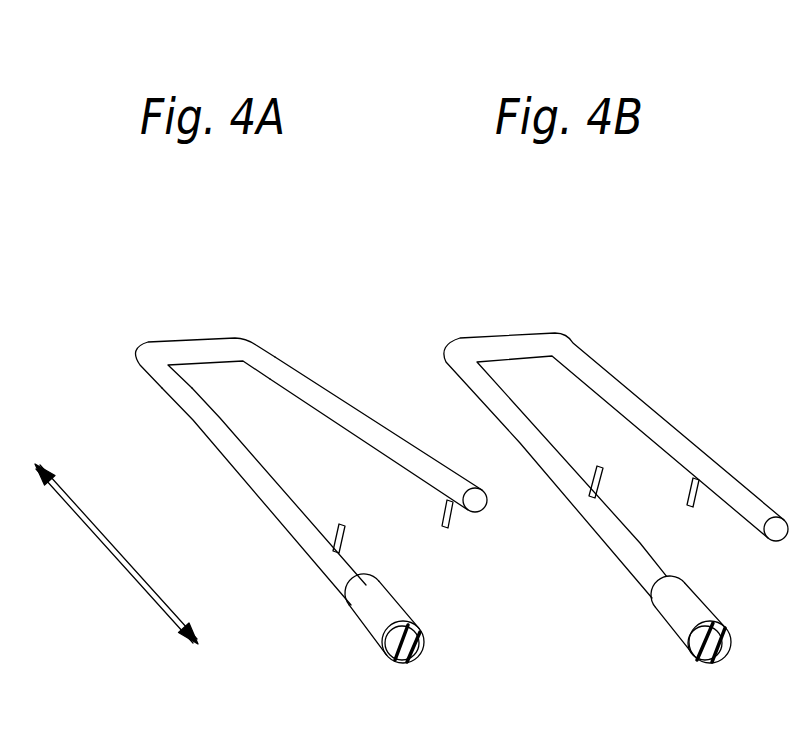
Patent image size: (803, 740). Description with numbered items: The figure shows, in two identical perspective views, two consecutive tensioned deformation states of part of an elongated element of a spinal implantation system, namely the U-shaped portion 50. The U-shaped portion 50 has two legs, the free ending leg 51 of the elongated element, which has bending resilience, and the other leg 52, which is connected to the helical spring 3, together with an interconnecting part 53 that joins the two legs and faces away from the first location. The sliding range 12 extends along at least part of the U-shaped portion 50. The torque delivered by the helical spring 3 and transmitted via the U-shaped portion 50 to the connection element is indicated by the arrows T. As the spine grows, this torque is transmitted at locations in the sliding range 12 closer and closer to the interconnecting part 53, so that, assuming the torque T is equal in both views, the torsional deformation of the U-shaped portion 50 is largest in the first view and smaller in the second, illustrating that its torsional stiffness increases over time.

In FIG. 4A, the helical spring 3 is at (373, 620).
In FIG. 4A, the sliding range 12 is at (110, 557).
In FIG. 4A, the U-shaped portion 50 is at (306, 326).
In FIG. 4B, the U-shaped portion 50 is at (660, 331).
In FIG. 4A, the free ending leg 51 is at (317, 400).
In FIG. 4A, the leg 52 is at (230, 447).
In FIG. 4A, the interconnecting part 53 is at (198, 352).
In FIG. 4A, the torque T is at (346, 540).
In FIG. 4B, the torque T is at (598, 473).